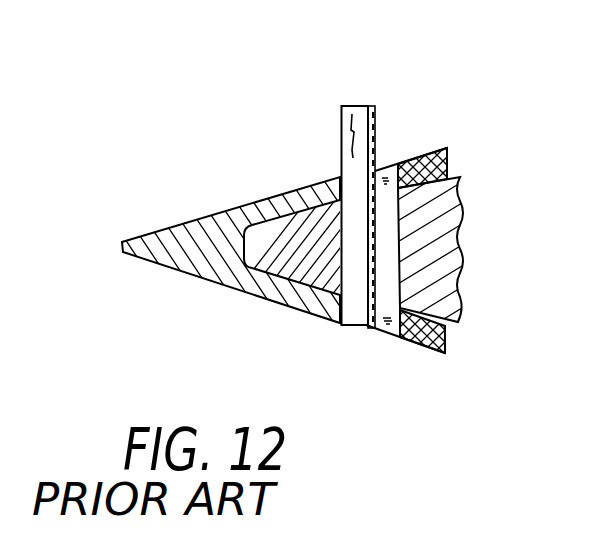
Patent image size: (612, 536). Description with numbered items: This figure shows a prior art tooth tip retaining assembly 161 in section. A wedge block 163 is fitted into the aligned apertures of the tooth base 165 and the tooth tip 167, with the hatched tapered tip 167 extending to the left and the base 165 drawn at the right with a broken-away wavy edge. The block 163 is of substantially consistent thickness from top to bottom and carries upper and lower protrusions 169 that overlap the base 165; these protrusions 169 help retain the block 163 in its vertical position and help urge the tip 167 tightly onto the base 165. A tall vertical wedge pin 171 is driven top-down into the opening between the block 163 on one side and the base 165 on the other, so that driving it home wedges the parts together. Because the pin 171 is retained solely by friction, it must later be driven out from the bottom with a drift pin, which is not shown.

The retaining assembly 161 is at (398, 146).
The wedge block 163 is at (380, 333).
The tooth base 165 is at (465, 250).
The tooth tip 167 is at (232, 207).
The upper and lower protrusions 169 is at (447, 158).
The wedge pin 171 is at (347, 104).